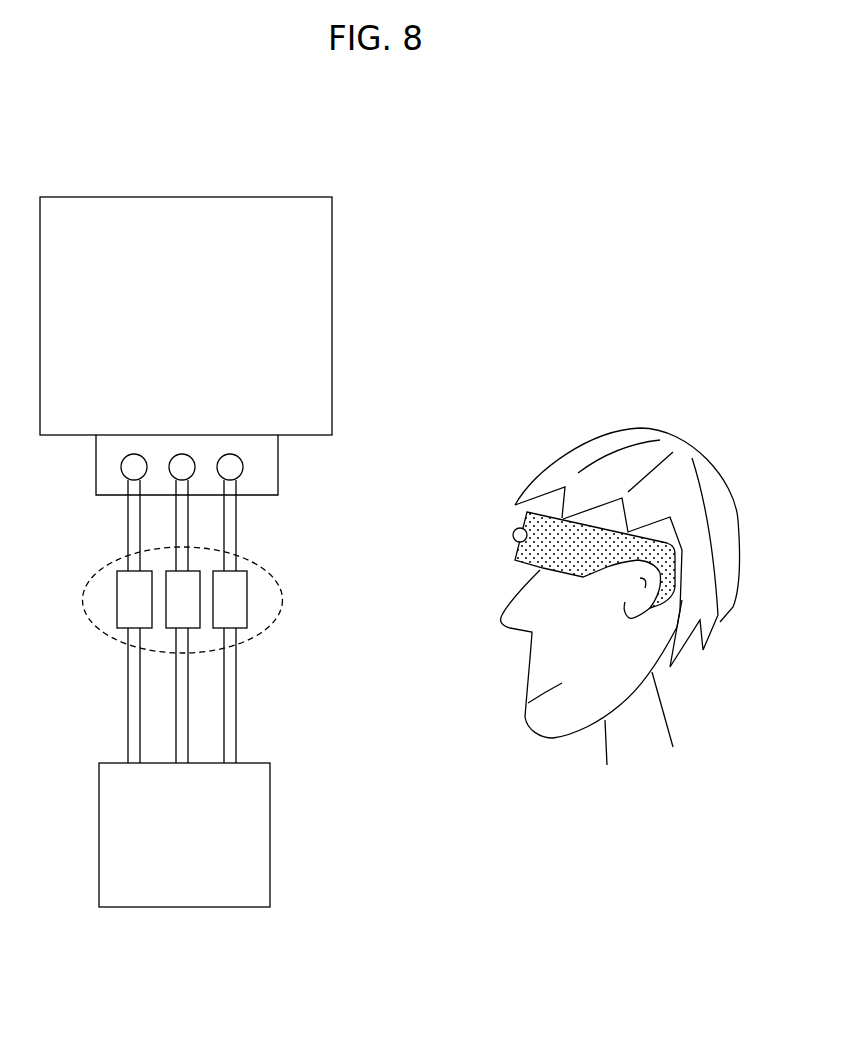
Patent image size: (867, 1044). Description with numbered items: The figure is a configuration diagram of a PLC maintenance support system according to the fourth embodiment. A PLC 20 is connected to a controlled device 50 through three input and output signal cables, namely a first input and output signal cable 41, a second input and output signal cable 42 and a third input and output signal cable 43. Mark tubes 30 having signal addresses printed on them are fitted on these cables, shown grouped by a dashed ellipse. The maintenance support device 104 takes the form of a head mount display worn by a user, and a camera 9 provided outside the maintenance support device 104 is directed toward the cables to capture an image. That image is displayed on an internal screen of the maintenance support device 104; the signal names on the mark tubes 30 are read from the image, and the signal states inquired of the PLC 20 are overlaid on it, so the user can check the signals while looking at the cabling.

The controlled device 50 is at (290, 197).
The mark tubes 30 is at (97, 572).
The first input and output signal cable 41 is at (224, 677).
The second input and output signal cable 42 is at (176, 713).
The third input and output signal cable 43 is at (128, 732).
The PLC 20 is at (270, 820).
The camera 9 is at (513, 532).
The maintenance support device 104 is at (522, 565).